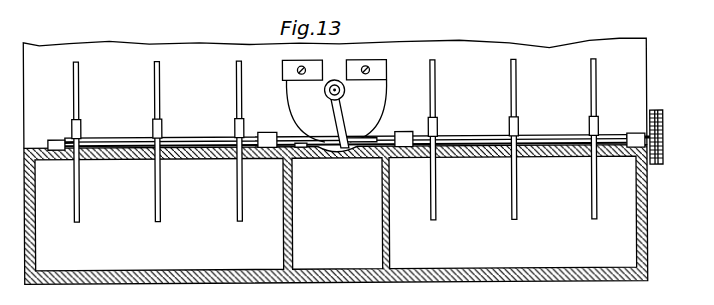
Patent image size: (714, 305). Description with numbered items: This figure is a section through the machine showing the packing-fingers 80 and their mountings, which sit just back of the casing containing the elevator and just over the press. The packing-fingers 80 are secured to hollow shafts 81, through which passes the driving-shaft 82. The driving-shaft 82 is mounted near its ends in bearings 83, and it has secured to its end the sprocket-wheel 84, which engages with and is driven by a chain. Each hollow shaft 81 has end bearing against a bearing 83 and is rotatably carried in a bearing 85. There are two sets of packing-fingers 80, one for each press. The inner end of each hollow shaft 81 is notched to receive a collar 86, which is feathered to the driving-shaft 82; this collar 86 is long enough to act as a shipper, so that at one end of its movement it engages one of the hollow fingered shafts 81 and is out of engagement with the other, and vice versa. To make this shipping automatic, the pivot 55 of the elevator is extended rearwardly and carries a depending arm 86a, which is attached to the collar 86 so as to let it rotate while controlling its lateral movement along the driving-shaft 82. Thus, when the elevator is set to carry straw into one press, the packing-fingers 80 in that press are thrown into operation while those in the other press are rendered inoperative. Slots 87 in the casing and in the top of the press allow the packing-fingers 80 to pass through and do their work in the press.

The pivot 55 is at (327, 93).
The packing-fingers 80 is at (72, 80).
The hollow shafts 81 is at (178, 137).
The driving-shaft 82 is at (298, 137).
The bearings 83 is at (56, 138).
The sprocket-wheel 84 is at (665, 140).
The bearing 85 is at (258, 133).
The collar 86 is at (369, 142).
The depending arm 86a is at (340, 116).
The slots 87 is at (81, 138).